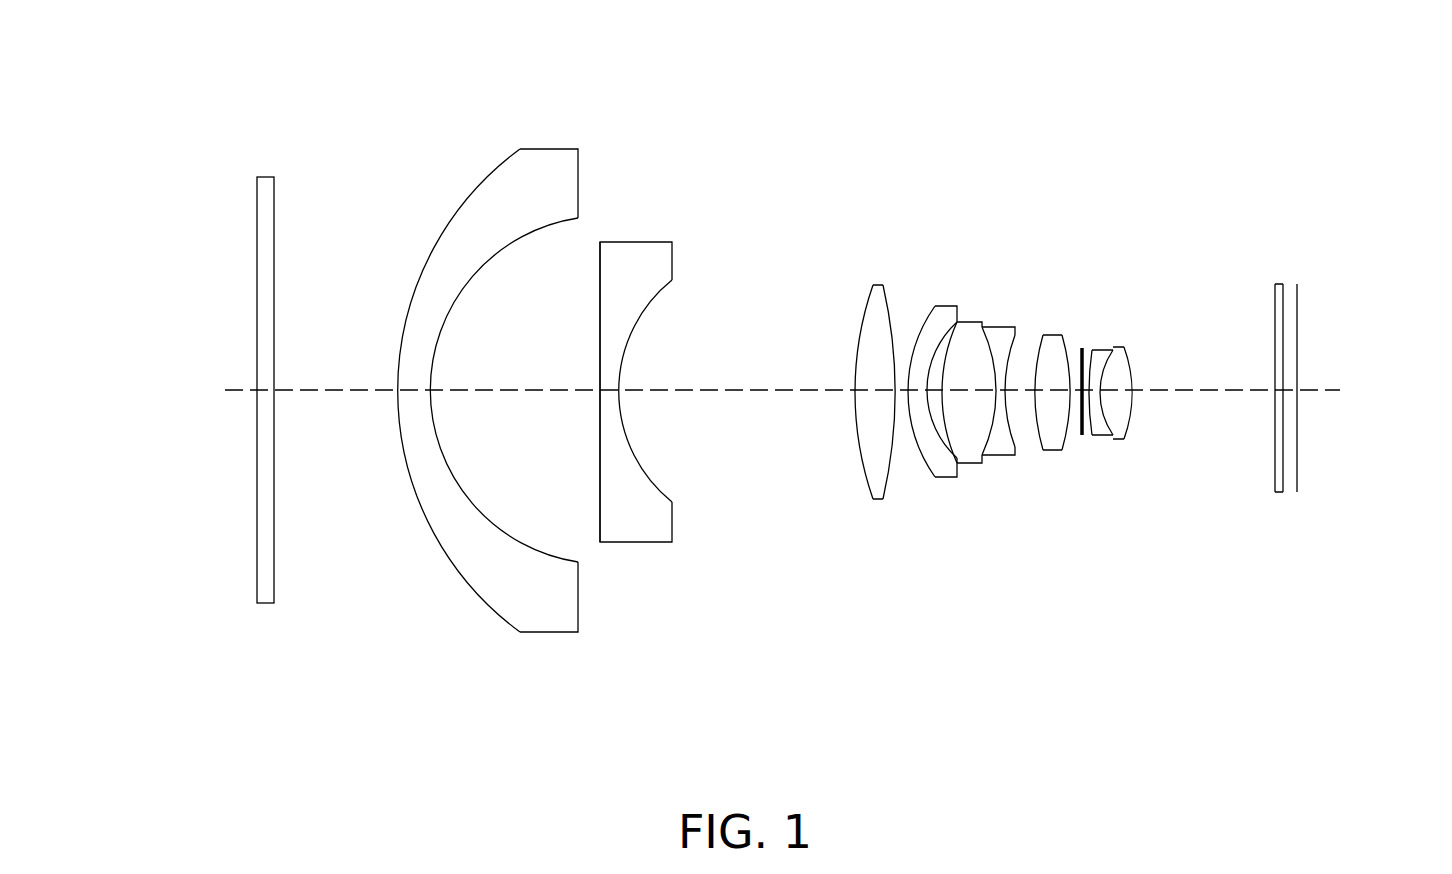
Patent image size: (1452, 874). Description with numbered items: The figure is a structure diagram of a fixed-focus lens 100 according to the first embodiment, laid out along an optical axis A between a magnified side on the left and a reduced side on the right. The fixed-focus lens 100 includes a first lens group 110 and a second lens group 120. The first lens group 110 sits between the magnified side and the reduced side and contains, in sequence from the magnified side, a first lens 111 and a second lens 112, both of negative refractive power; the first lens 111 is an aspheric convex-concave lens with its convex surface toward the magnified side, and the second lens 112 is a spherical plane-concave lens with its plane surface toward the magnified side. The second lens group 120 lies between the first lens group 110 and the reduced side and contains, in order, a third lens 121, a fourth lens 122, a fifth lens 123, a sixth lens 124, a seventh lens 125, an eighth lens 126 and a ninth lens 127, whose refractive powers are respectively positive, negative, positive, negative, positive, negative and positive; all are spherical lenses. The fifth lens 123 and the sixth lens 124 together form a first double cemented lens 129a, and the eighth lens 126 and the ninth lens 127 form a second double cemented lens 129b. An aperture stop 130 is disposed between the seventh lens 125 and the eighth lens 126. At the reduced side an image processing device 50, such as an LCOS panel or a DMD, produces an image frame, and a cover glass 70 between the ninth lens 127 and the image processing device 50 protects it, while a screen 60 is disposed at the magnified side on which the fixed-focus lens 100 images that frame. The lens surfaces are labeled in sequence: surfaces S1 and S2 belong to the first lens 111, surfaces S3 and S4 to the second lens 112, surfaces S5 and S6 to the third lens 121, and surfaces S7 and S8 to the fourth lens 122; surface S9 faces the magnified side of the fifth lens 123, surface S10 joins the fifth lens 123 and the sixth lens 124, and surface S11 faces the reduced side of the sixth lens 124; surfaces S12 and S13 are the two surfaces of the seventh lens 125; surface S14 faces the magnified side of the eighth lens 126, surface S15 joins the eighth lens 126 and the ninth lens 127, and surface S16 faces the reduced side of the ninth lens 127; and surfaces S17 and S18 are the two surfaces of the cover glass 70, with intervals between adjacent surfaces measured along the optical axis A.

The fixed-focus lens 100 is at (1400, 743).
The first lens group 110 is at (646, 54).
The first lens 111 is at (489, 384).
The second lens 112 is at (633, 384).
The second lens group 120 is at (1212, 118).
The third lens 121 is at (849, 409).
The fourth lens 122 is at (904, 409).
The fifth lens 123 is at (951, 409).
The sixth lens 124 is at (996, 388).
The seventh lens 125 is at (1041, 409).
The eighth lens 126 is at (1127, 409).
The ninth lens 127 is at (1164, 388).
The first double cemented lens 129a is at (938, 180).
The second double cemented lens 129b is at (1123, 180).
The aperture stop 130 is at (1082, 437).
The screen 60 is at (267, 542).
The image processing device 50 is at (1290, 454).
The cover glass 70 is at (1277, 308).
The optical axis A is at (727, 384).
The surface S1 is at (460, 579).
The surface S2 is at (468, 481).
The surface S3 is at (597, 466).
The surface S4 is at (644, 462).
The surface S5 is at (855, 422).
The surface S6 is at (885, 468).
The surface S7 is at (920, 450).
The surface S8 is at (943, 450).
The surface S9 is at (948, 424).
The surface S10 is at (995, 408).
The surface S11 is at (1011, 431).
The surface S12 is at (1034, 409).
The surface S13 is at (1067, 411).
The surface S14 is at (1093, 423).
The surface S15 is at (1109, 415).
The surface S16 is at (1134, 410).
The surface S17 is at (1271, 453).
The surface S18 is at (1286, 418).